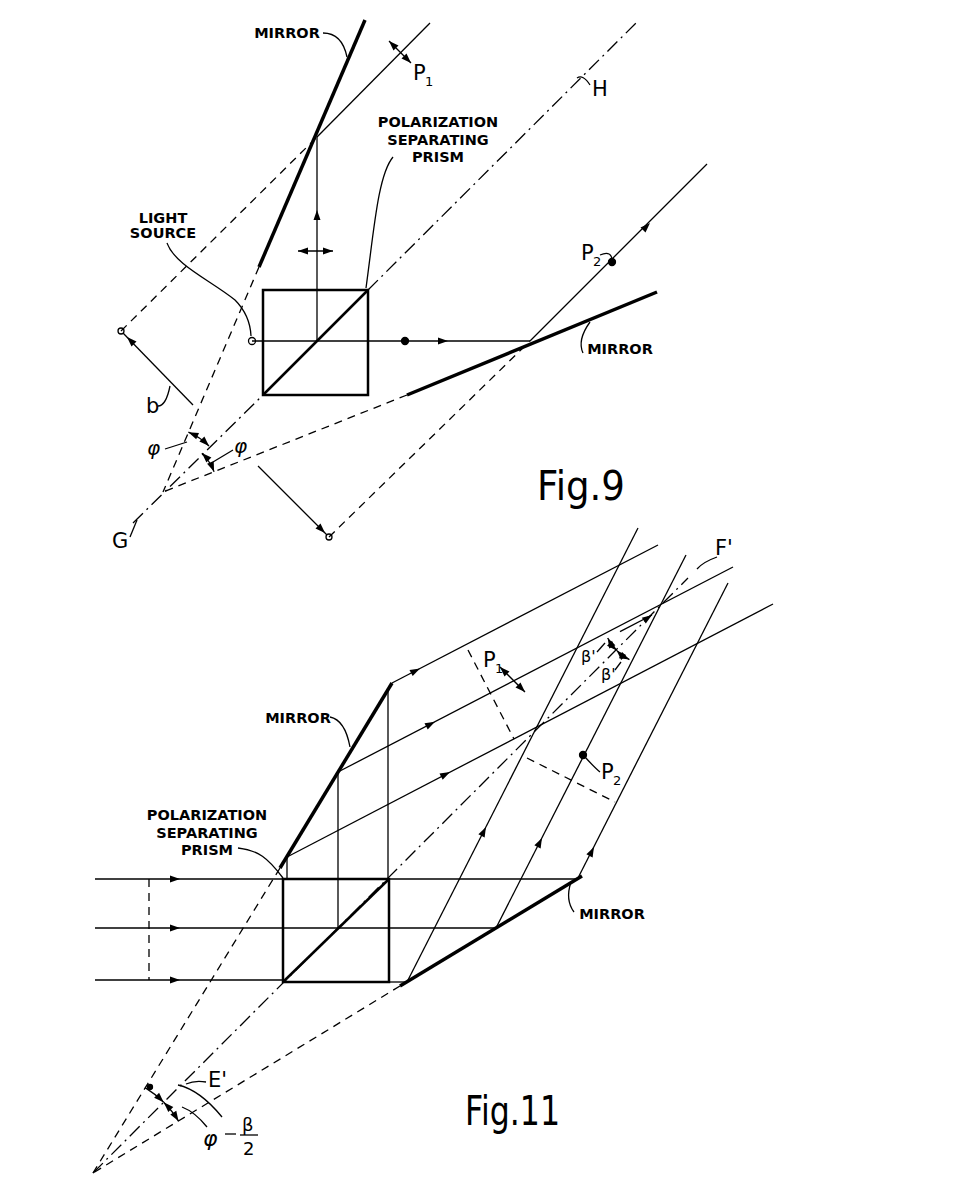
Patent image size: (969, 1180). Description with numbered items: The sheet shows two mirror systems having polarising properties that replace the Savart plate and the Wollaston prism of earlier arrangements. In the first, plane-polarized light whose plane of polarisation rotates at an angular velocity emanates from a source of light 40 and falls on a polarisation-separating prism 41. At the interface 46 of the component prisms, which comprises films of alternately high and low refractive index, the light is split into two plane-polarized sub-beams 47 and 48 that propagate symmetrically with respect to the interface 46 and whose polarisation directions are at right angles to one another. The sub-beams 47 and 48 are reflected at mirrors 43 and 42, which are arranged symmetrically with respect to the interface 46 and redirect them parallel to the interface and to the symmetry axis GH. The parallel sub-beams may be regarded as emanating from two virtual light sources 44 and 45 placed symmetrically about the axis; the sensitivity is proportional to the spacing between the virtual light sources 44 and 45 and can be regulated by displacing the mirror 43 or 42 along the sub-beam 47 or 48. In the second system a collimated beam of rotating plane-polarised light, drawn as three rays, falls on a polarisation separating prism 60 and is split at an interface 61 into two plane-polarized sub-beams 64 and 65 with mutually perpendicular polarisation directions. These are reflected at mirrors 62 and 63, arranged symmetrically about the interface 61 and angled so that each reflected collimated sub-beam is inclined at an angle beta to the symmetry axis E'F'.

In FIG. 9, the source of light 40 is at (250, 337).
In FIG. 9, the polarisation-separating prism 41 is at (311, 395).
In FIG. 9, the mirror 42 is at (497, 359).
In FIG. 9, the mirror 43 is at (337, 92).
In FIG. 9, the virtual light source 44 is at (118, 327).
In FIG. 9, the virtual light source 45 is at (330, 541).
In FIG. 9, the interface 46 is at (353, 312).
In FIG. 9, the sub-beam 47 is at (320, 175).
In FIG. 9, the sub-beam 48 is at (473, 338).
In FIG. 11, the polarisation separating prism 60 is at (311, 983).
In FIG. 11, the interface 61 is at (323, 944).
In FIG. 11, the mirror 62 is at (329, 790).
In FIG. 11, the mirror 63 is at (528, 908).
In FIG. 11, the sub-beam 64 is at (339, 852).
In FIG. 11, the sub-beam 65 is at (462, 928).